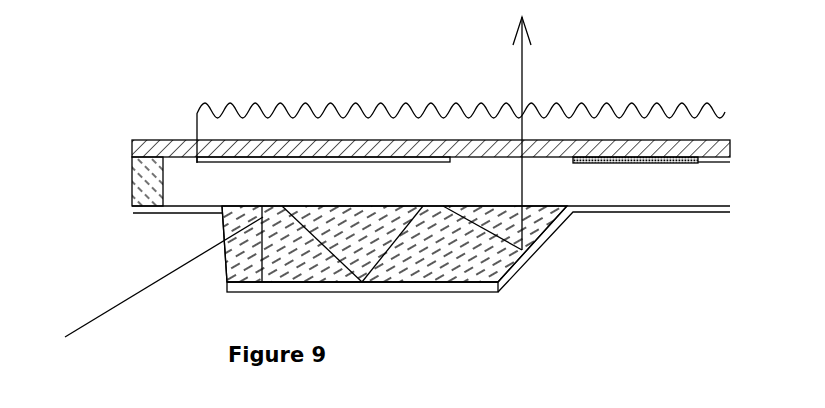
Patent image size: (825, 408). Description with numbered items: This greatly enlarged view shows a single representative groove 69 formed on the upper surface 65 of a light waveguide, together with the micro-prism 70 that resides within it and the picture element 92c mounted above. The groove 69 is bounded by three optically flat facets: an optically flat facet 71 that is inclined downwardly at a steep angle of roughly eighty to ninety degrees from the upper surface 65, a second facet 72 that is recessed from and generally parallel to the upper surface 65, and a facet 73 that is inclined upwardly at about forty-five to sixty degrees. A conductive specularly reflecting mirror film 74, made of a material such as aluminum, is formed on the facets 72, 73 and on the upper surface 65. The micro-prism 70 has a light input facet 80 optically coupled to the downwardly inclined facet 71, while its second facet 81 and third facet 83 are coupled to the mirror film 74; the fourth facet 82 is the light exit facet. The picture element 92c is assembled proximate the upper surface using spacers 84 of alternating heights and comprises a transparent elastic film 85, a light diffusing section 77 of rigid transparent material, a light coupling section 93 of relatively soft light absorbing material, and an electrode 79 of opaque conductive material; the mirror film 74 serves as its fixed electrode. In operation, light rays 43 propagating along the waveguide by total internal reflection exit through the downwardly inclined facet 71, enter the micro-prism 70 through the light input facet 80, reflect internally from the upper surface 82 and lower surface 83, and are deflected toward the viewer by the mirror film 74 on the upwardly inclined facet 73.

The transparent elastic film 85 is at (387, 119).
The spacers 84 is at (101, 196).
The light diffusing section 77 is at (461, 98).
The light coupling section 93 is at (323, 97).
The electrode 79 is at (635, 98).
The picture element 92c is at (723, 104).
The upper surface 65 is at (455, 186).
The second facet 81 is at (552, 226).
The light input facet 80 is at (244, 227).
The third facet 83 is at (312, 227).
The fourth facet 82 is at (377, 227).
The groove 69 is at (394, 227).
The micro-prism 70 is at (467, 211).
The optically flat facet 71 is at (197, 268).
The light rays 43 is at (92, 322).
The second facet 72 is at (362, 314).
The conductive specularly reflecting mirror film 74 is at (362, 314).
The facet 73 is at (614, 255).